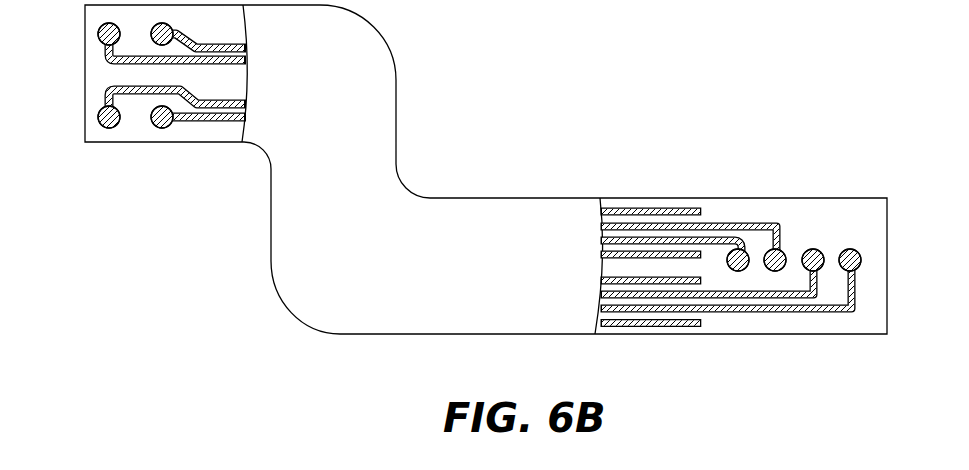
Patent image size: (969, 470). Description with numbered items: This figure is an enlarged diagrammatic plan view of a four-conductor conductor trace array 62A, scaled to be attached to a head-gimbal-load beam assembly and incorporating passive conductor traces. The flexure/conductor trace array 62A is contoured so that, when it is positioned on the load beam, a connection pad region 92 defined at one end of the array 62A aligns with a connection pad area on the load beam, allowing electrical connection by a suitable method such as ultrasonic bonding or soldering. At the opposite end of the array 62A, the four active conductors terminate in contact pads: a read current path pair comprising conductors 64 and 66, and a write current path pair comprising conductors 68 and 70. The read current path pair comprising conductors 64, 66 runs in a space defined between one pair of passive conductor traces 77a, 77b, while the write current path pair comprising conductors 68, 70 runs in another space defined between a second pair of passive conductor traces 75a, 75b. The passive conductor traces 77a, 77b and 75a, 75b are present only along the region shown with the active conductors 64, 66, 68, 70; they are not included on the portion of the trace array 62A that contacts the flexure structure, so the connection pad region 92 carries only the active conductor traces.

The flexure/conductor trace array 62A is at (383, 335).
The connection pad region 92 is at (131, 159).
The upper conductive trace 77a is at (632, 208).
The upper conductive trace 77b is at (674, 251).
The lower conductive trace 75a is at (651, 327).
The lower conductive trace 75b is at (674, 285).
The conductor 64 is at (738, 271).
The conductor 66 is at (775, 271).
The conductor 68 is at (813, 249).
The conductor 70 is at (850, 249).